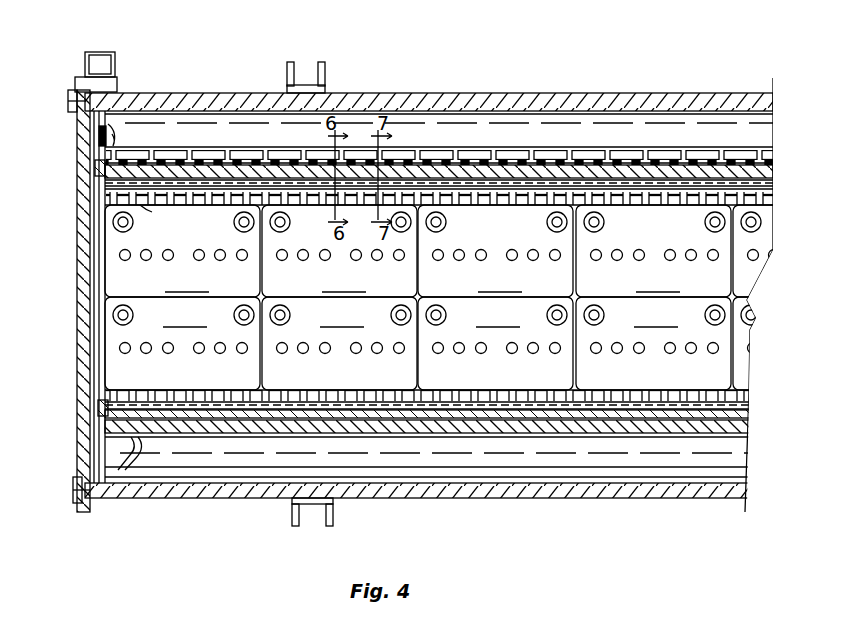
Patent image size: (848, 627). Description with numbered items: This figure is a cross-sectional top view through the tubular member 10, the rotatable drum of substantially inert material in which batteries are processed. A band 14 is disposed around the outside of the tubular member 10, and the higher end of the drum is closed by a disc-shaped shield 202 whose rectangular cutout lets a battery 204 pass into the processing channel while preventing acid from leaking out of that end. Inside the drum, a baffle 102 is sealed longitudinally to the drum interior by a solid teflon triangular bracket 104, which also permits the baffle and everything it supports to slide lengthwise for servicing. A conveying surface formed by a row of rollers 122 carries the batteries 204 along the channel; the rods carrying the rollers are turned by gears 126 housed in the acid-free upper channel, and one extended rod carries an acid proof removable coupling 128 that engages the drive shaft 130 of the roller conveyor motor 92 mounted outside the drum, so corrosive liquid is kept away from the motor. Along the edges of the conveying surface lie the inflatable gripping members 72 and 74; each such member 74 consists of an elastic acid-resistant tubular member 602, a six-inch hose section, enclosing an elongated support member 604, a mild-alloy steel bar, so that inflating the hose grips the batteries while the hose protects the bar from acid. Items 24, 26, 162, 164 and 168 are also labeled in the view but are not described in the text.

The tubular member 10 is at (536, 84).
The band 14 is at (305, 85).
The connector post 24 is at (325, 68).
The connector post 26 is at (288, 78).
The inflatable gripping member 72 is at (775, 197).
The inflatable gripping member 74 is at (98, 410).
The roller conveyor motor 92 is at (117, 62).
The baffle 102 is at (752, 428).
The triangular bracket 104 is at (775, 157).
The rollers 122 is at (750, 393).
The gears 126 is at (262, 152).
The acid proof removable coupling 128 is at (99, 137).
The drive shaft 130 is at (106, 118).
The lead wire 162 is at (148, 205).
The cable 164 is at (138, 445).
The end block 168 is at (88, 168).
The disc-shaped shield 202 is at (78, 440).
The battery 204 is at (476, 297).
The elastic acid-resistant tubular member 602 is at (775, 171).
The elongated support member 604 is at (775, 186).